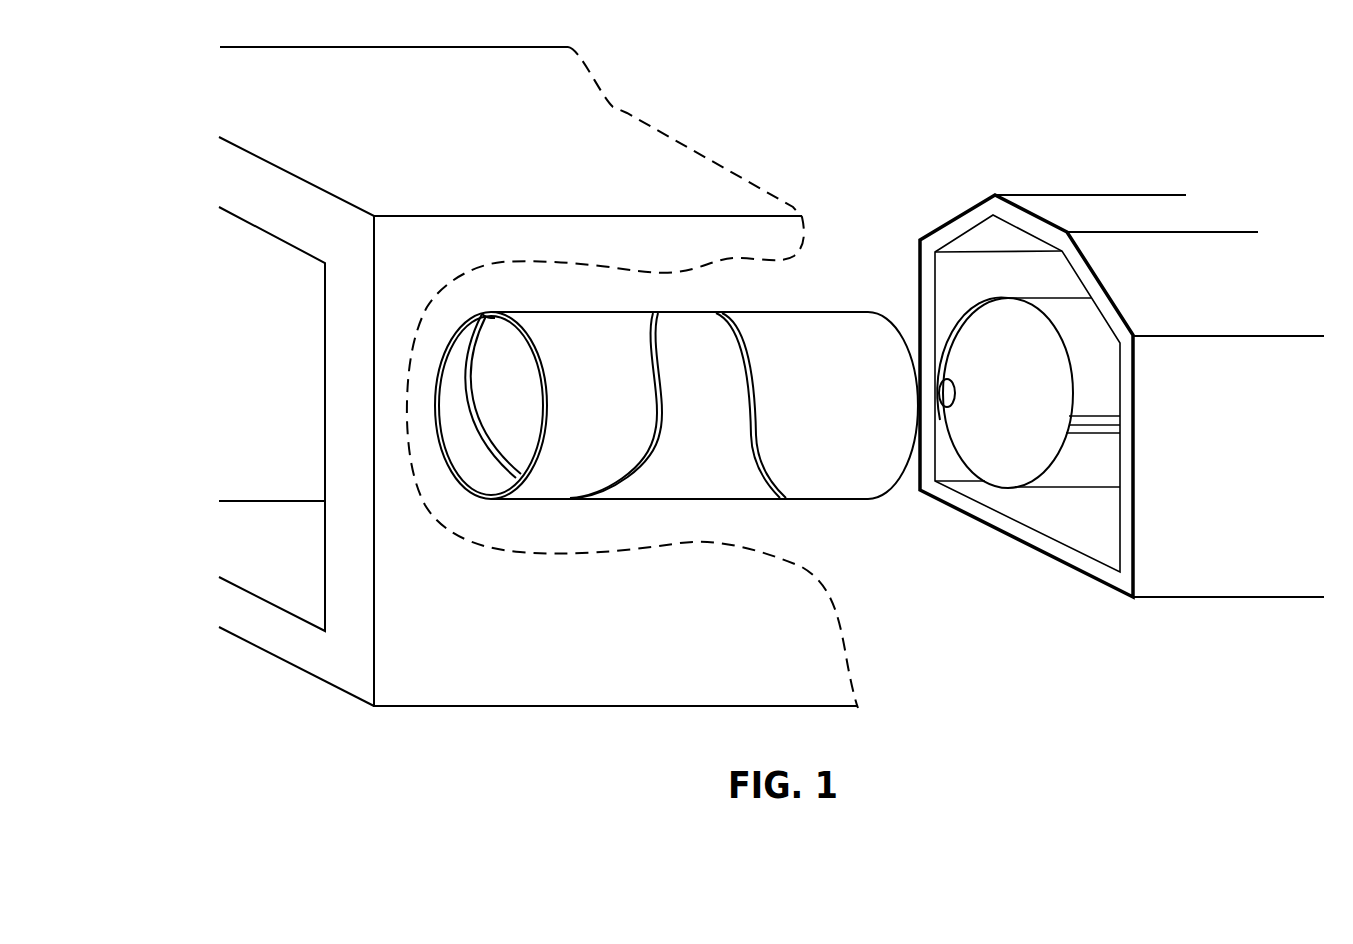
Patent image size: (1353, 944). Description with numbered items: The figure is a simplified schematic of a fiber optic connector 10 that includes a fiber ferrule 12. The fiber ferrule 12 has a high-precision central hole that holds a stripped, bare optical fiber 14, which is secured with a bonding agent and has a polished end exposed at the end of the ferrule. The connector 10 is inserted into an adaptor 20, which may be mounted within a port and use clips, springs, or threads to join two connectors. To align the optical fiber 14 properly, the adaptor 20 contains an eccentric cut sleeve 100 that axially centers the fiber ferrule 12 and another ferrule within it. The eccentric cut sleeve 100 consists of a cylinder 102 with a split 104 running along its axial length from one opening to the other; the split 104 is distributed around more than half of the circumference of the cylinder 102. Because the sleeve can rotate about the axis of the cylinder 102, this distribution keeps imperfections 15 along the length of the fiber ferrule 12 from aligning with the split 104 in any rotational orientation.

The fiber optic connector 10 is at (1112, 180).
The fiber ferrule 12 is at (1012, 470).
The optical fiber 14 is at (949, 407).
The imperfections 15 is at (1088, 433).
The adaptor 20 is at (622, 104).
The eccentric cut sleeve 100 is at (816, 302).
The cylinder 102 is at (822, 482).
The split 104 is at (486, 443).